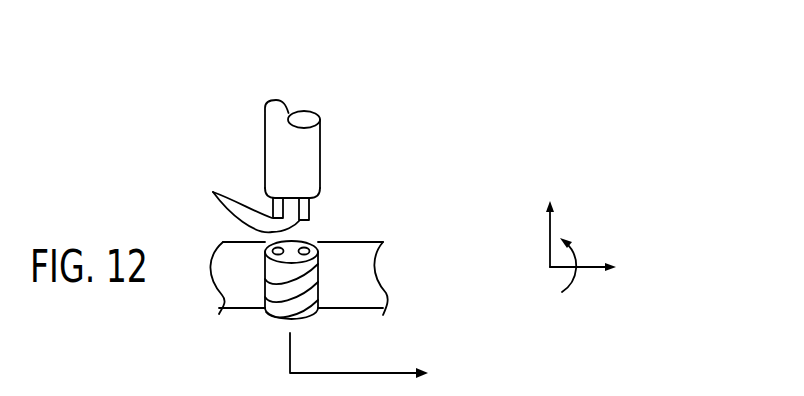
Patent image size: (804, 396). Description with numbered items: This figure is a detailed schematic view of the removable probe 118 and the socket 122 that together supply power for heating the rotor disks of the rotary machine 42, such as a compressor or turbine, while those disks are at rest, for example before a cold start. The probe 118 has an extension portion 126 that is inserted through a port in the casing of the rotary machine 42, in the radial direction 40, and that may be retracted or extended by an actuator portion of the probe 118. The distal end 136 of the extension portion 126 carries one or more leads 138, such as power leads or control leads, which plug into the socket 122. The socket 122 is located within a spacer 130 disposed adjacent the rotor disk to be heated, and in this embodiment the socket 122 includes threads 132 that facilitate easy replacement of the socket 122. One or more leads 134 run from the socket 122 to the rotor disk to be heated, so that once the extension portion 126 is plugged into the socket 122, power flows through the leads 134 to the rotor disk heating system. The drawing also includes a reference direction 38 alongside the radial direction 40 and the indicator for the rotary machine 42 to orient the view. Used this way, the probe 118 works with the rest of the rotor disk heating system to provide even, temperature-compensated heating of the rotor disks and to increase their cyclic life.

The removable probe 118 is at (216, 104).
The extension portion 126 is at (322, 137).
The distal end 136 is at (322, 152).
The leads 138 is at (236, 204).
The socket 122 is at (306, 240).
The threads 132 is at (283, 308).
The spacer 130 is at (362, 242).
The leads 134 is at (353, 373).
The x-axis direction 38 is at (588, 268).
The radial direction 40 is at (548, 240).
The rotary machine 42 is at (577, 252).